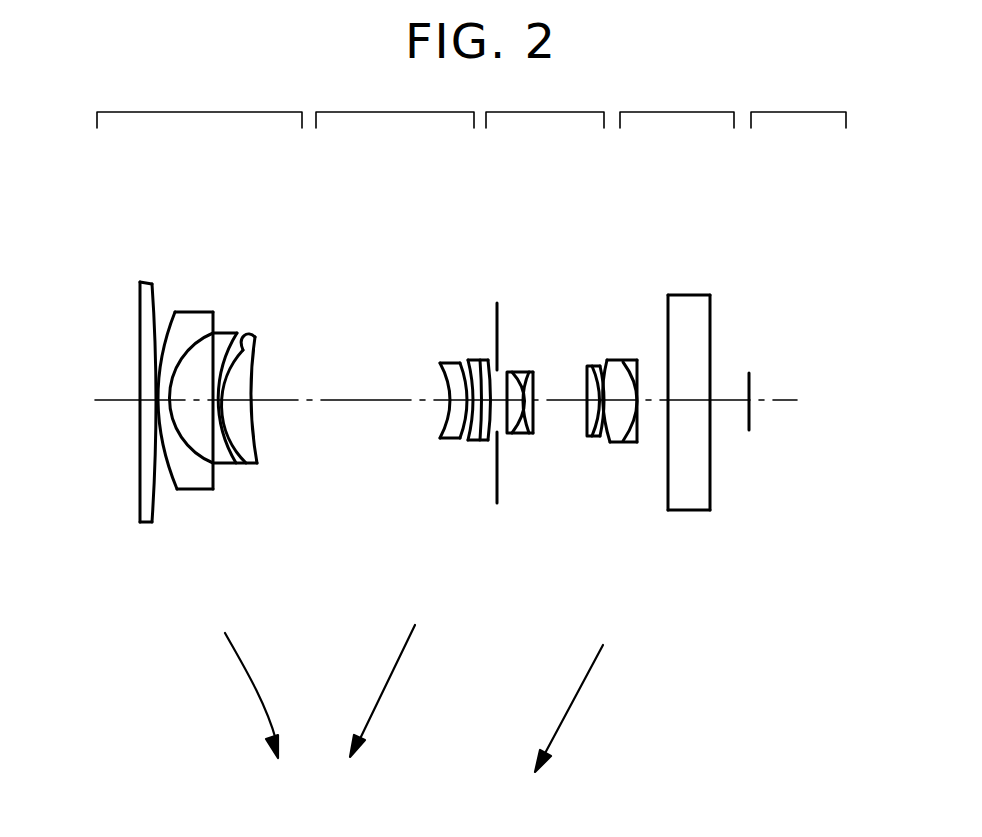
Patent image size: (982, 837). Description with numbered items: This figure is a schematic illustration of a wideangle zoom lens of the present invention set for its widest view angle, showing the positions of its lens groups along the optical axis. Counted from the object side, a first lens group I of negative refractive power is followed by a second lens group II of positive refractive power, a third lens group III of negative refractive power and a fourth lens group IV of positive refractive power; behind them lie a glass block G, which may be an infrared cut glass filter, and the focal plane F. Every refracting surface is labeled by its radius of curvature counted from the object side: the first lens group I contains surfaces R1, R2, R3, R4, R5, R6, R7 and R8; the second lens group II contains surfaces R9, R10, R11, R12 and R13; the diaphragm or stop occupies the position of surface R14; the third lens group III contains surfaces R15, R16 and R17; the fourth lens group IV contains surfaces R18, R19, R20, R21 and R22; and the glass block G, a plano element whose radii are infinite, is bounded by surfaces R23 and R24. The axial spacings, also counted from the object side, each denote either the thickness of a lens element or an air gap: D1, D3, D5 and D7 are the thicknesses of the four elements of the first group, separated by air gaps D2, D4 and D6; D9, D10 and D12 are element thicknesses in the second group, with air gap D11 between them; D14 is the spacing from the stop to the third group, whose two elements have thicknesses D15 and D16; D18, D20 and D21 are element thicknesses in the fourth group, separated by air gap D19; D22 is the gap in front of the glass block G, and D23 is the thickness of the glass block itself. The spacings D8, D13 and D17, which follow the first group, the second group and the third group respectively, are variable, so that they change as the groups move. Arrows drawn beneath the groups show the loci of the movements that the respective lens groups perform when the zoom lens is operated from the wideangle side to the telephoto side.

The first lens group I is at (218, 104).
The second lens group II is at (397, 104).
The third lens group III is at (553, 104).
The fourth lens group IV is at (688, 86).
The glass block G is at (757, 294).
The focal plane F is at (752, 377).
The first lens surface R1 is at (140, 315).
The second lens surface R2 is at (147, 290).
The third lens surface R3 is at (168, 328).
The fourth lens surface R4 is at (183, 338).
The fifth lens surface R5 is at (211, 318).
The sixth lens surface R6 is at (228, 332).
The seventh lens surface R7 is at (252, 347).
The eighth lens surface R8 is at (258, 346).
The ninth lens surface R9 is at (437, 370).
The tenth lens surface R10 is at (448, 366).
The eleventh lens surface R11 is at (466, 364).
The twelfth lens surface R12 is at (472, 361).
The thirteenth lens surface R13 is at (481, 358).
The stop surface R14 is at (497, 303).
The fifteenth lens surface R15 is at (509, 371).
The sixteenth lens surface R16 is at (514, 371).
The seventeenth lens surface R17 is at (536, 373).
The eighteenth lens surface R18 is at (586, 368).
The nineteenth lens surface R19 is at (595, 366).
The twentieth lens surface R20 is at (605, 361).
The twenty-first lens surface R21 is at (624, 363).
The twenty-second lens surface R22 is at (641, 362).
The glass block front surface R23 is at (668, 323).
The glass block rear surface R24 is at (712, 330).
The first lens thickness D1 is at (147, 402).
The first air gap D2 is at (157, 402).
The second lens thickness D3 is at (162, 402).
The second air gap D4 is at (189, 402).
The third lens thickness D5 is at (216, 402).
The third air gap D6 is at (222, 402).
The fourth lens thickness D7 is at (247, 402).
The variable air gap D8 is at (340, 402).
The fifth lens thickness D9 is at (440, 403).
The sixth lens thickness D10 is at (460, 403).
The fourth air gap D11 is at (472, 403).
The seventh lens thickness D12 is at (483, 403).
The variable air gap D13 is at (493, 403).
The stop air gap D14 is at (500, 403).
The eighth lens thickness D15 is at (515, 403).
The ninth lens thickness D16 is at (528, 403).
The variable air gap D17 is at (546, 403).
The tenth lens thickness D18 is at (594, 403).
The fifth air gap D19 is at (600, 403).
The eleventh lens thickness D20 is at (612, 403).
The twelfth lens thickness D21 is at (635, 403).
The sixth air gap D22 is at (653, 403).
The glass block thickness D23 is at (688, 403).